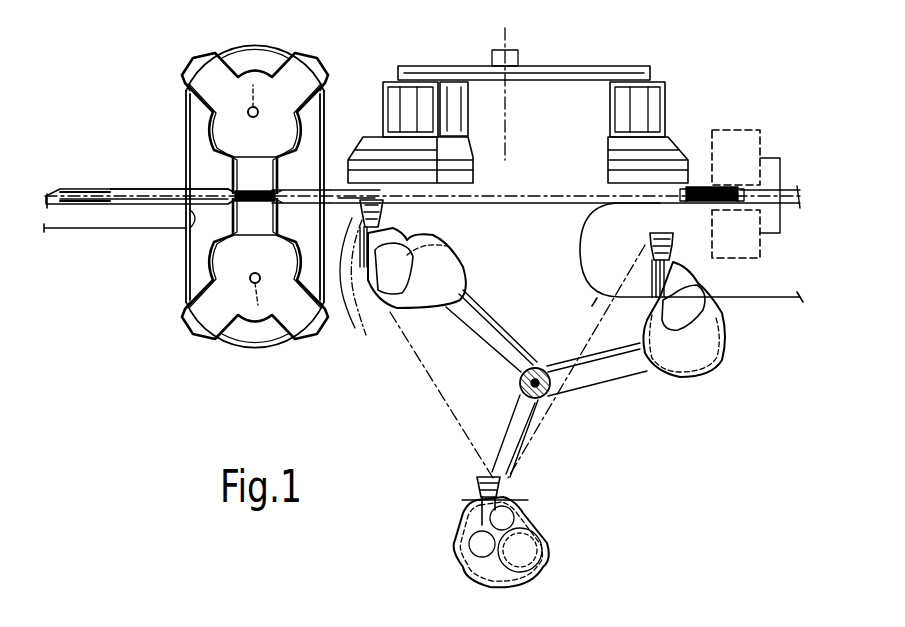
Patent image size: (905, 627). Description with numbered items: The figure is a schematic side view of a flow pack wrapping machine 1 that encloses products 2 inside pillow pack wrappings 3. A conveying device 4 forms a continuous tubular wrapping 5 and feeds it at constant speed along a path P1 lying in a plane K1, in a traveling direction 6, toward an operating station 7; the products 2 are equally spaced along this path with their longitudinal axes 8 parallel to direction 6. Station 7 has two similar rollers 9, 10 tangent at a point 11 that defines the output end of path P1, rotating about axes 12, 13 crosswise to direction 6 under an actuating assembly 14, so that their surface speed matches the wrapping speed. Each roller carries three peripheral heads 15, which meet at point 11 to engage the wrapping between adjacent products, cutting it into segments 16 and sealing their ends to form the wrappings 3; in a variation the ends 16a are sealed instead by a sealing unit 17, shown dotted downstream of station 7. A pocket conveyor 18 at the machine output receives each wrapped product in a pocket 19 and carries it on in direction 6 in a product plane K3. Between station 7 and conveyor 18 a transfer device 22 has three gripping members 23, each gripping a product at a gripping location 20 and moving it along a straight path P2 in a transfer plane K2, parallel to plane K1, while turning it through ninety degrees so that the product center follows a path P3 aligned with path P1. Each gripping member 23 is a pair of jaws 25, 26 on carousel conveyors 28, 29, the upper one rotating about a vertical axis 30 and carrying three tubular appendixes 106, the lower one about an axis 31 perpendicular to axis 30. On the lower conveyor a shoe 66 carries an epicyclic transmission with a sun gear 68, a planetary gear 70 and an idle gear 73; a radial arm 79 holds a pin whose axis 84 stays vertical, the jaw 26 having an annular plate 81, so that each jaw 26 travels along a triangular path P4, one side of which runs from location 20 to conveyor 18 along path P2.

The wrapping machine 1 is at (364, 48).
The product 2 is at (135, 190).
The wrapping 3 is at (330, 154).
The conveying device 4 is at (100, 230).
The tubular wrapping 5 is at (82, 190).
The traveling direction 6 is at (92, 190).
The operating station 7 is at (226, 185).
The longitudinal axis 8 is at (282, 192).
The roller 9 is at (232, 58).
The roller 10 is at (245, 332).
The point of tangency 11 is at (226, 210).
The axis of rotation 12 is at (254, 62).
The axis of rotation 13 is at (268, 335).
The actuating assembly 14 is at (214, 58).
The peripheral head 15 is at (191, 80).
The segment 16 is at (300, 206).
The segment end 16a is at (406, 190).
The sealing unit 17 is at (789, 167).
The pocket conveyor 18 is at (776, 300).
The pocket 19 is at (698, 186).
The gripping location 20 is at (392, 206).
The transfer device 22 is at (551, 121).
The gripping member 23 is at (432, 192).
The jaw 25 is at (468, 188).
The jaw 26 is at (645, 252).
The carousel conveyor 28 is at (558, 62).
The carousel conveyor 29 is at (470, 389).
The vertical axis 30 is at (513, 50).
The axis 31 is at (538, 368).
The shoe 66 is at (473, 288).
The sun gear 68 is at (527, 516).
The planetary gear 70 is at (522, 586).
The idle gear 73 is at (487, 562).
The radial arm 79 is at (527, 531).
The annular plate 81 is at (648, 241).
The pin axis 84 is at (450, 247).
The tubular appendix 106 is at (376, 93).
The plane K1 is at (49, 196).
The transfer plane K2 is at (519, 150).
The product plane K3 is at (789, 198).
The path P1 is at (160, 190).
The path P2 is at (538, 194).
The path P3 is at (556, 194).
The path P4 is at (577, 397).